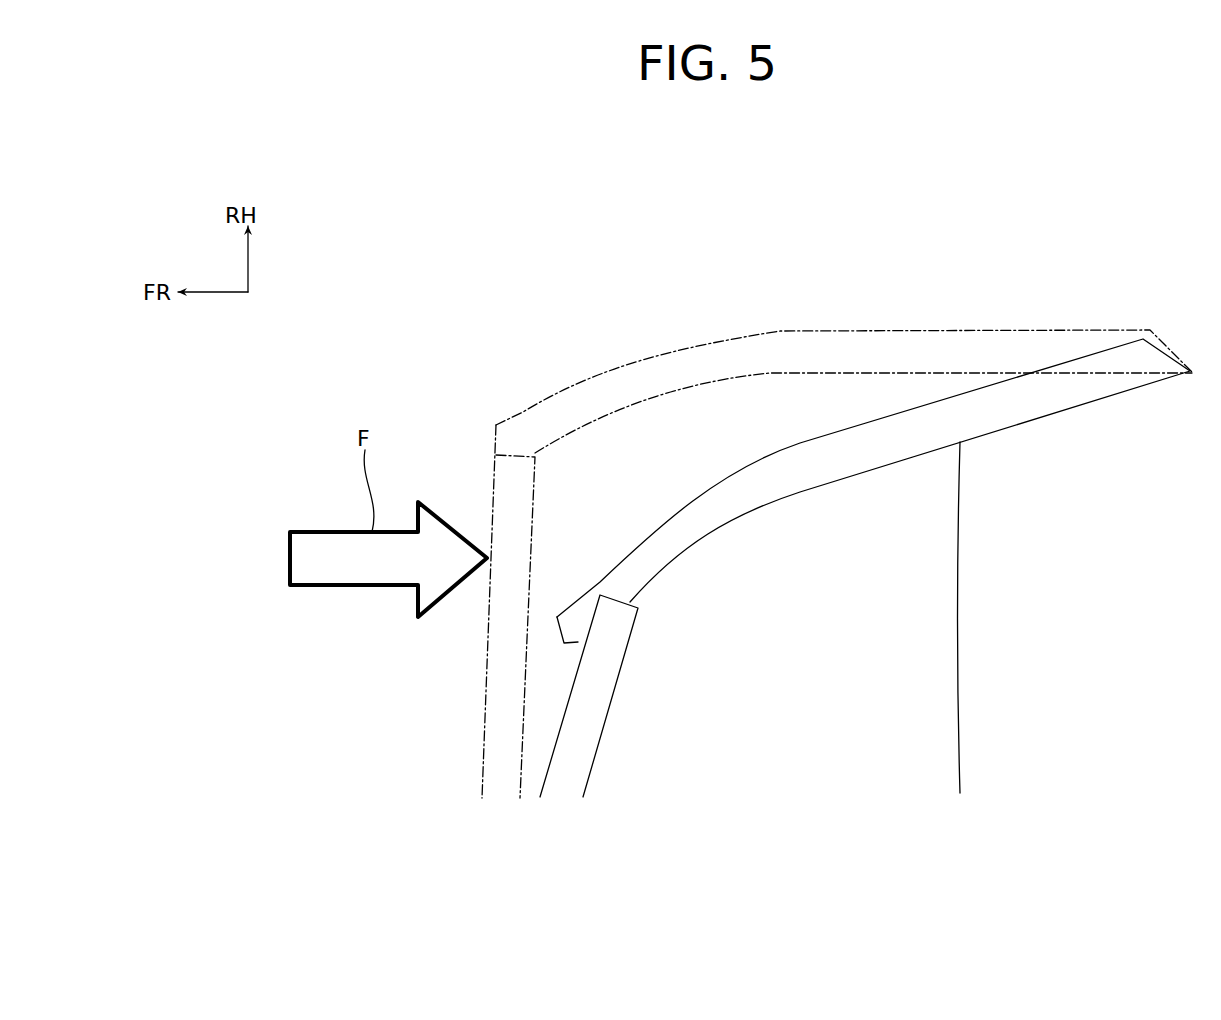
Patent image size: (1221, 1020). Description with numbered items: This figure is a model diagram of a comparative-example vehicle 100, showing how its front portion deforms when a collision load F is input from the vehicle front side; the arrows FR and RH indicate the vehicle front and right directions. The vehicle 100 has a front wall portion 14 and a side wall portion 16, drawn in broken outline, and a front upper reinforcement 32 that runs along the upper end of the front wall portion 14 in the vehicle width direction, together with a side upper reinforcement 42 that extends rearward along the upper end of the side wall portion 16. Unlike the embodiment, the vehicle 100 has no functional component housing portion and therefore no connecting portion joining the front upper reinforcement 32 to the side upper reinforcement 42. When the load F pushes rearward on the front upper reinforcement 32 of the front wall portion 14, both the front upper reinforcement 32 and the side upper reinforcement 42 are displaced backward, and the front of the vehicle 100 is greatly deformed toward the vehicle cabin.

The vehicle 100 is at (400, 320).
The front wall portion 14 is at (482, 738).
The side wall portion 16 is at (818, 330).
The front upper reinforcement 32 is at (613, 693).
The side upper reinforcement 42 is at (1068, 362).